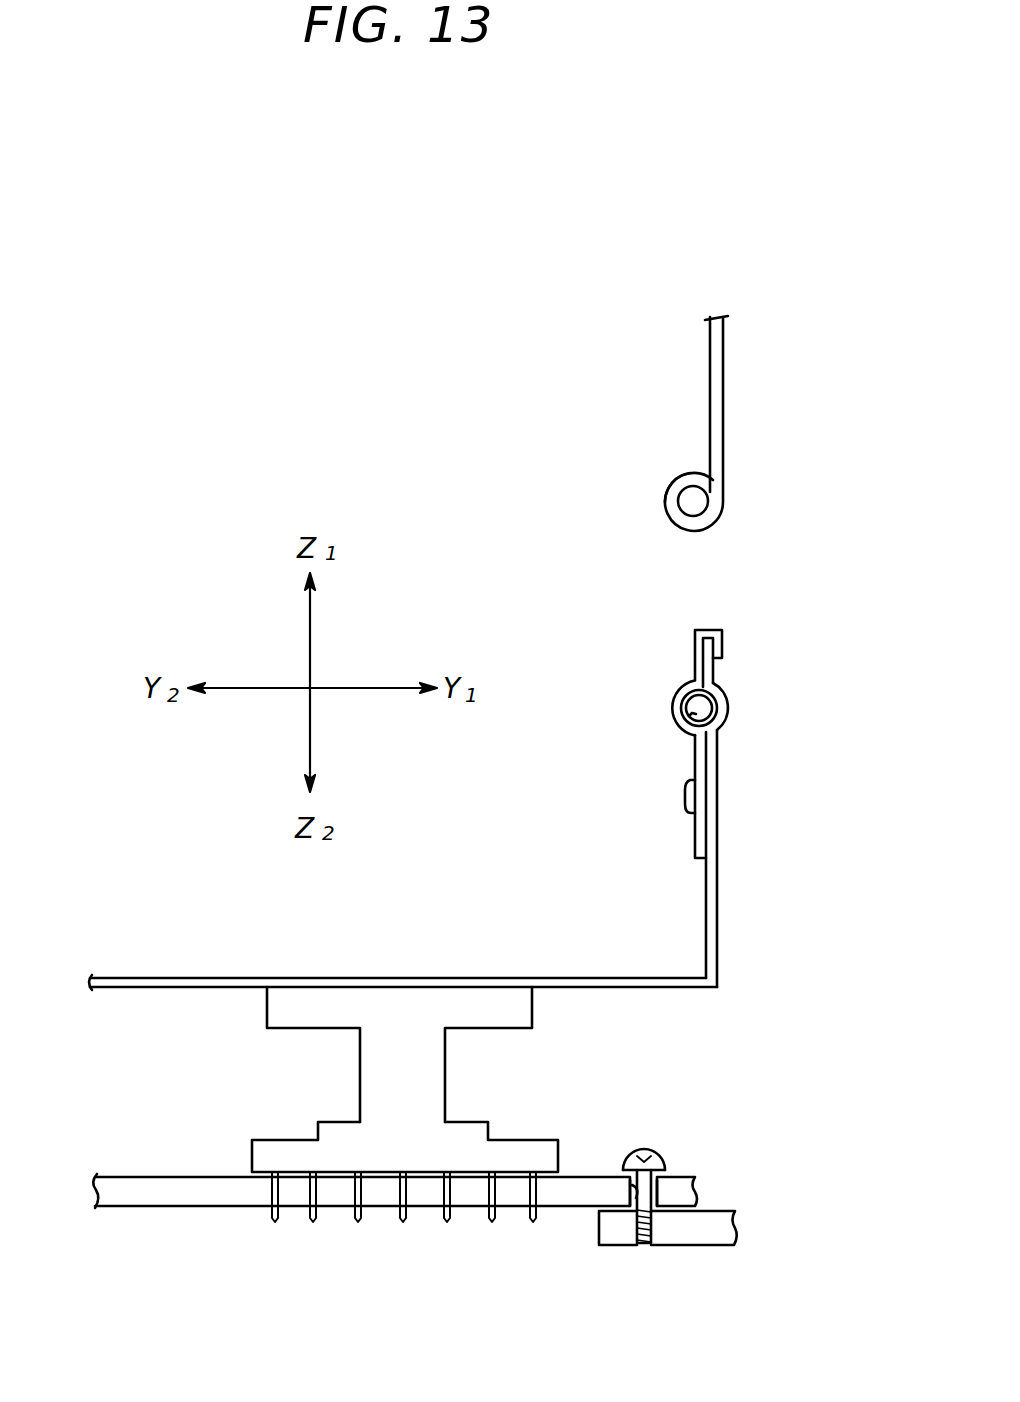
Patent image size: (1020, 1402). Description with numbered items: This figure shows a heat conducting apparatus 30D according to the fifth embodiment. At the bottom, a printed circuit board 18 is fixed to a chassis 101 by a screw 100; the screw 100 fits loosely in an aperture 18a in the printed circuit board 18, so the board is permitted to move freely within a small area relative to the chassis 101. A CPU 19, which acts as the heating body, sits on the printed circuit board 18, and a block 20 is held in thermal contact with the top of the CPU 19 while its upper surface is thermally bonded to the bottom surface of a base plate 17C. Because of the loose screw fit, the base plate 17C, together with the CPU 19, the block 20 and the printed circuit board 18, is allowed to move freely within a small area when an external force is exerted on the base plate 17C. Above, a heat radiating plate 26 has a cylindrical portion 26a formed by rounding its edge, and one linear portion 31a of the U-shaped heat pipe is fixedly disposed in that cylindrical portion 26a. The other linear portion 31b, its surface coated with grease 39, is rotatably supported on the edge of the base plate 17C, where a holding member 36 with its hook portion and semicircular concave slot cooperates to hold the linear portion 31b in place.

The heat conducting apparatus 30D is at (406, 270).
The heat radiating plate 26 is at (723, 381).
The cylindrical portion 26a is at (676, 488).
The linear portion 31a is at (688, 500).
The holding member 36 is at (695, 656).
The grease 39 is at (683, 716).
The linear portion 31b is at (703, 700).
The base plate 17C is at (160, 978).
The block 20 is at (360, 1060).
The CPU 19 is at (530, 1150).
The printed circuit board 18 is at (163, 1195).
The aperture 18a is at (632, 1207).
The screw 100 is at (650, 1153).
The chassis 101 is at (706, 1238).